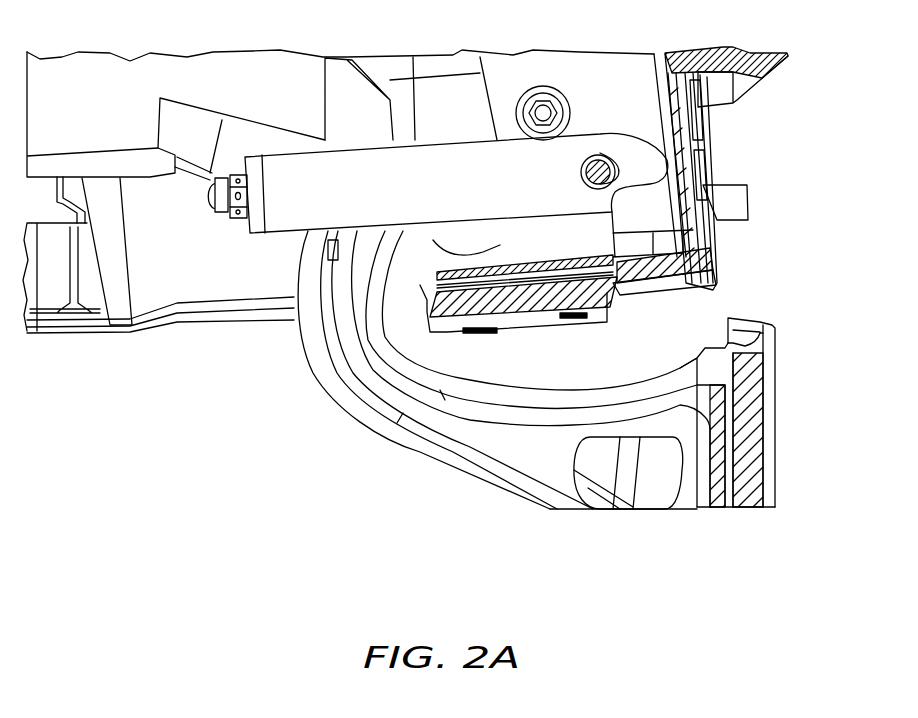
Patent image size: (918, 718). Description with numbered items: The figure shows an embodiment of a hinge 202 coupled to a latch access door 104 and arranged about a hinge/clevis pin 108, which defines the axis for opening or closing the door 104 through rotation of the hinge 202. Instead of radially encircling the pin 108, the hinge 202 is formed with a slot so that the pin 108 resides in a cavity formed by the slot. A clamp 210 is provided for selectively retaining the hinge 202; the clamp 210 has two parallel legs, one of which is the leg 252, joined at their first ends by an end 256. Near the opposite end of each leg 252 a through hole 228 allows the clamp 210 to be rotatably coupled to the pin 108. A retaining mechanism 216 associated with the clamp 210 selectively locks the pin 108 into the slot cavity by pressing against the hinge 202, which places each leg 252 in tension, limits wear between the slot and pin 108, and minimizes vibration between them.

The latch access door 104 is at (775, 415).
The hinge/clevis pin 108 is at (593, 153).
The hinge 202 is at (445, 453).
The clamp 210 is at (437, 163).
The retaining mechanism 216 is at (215, 203).
The through hole 228 is at (580, 173).
The leg 252 is at (312, 190).
The end 256 is at (260, 155).